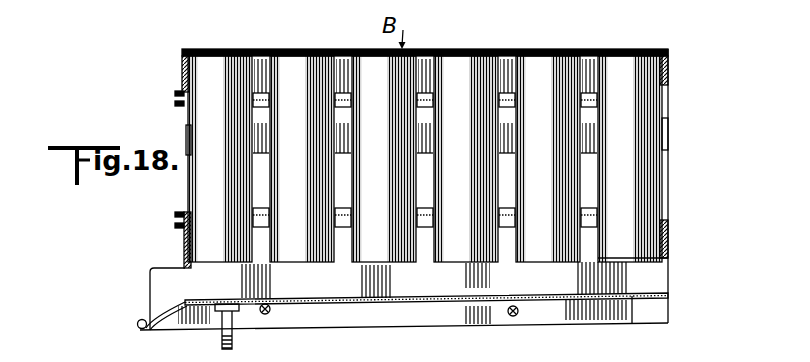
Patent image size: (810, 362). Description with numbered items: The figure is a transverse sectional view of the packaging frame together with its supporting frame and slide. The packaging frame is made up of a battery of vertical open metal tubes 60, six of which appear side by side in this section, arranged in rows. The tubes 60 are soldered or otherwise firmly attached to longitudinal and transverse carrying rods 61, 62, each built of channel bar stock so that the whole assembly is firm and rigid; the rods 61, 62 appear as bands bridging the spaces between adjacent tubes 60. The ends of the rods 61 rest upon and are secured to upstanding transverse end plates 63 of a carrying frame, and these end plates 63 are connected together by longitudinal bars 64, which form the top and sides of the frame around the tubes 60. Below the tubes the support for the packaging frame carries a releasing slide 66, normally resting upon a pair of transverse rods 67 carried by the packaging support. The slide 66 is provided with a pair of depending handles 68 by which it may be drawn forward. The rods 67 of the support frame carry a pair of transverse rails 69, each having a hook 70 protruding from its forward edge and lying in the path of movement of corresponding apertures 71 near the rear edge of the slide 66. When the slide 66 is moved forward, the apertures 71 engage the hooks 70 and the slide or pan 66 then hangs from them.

The vertical open metal tube 60 is at (545, 252).
The longitudinal carrying rod 61 is at (186, 209).
The transverse carrying rod 62 is at (178, 104).
The transverse end plate 63 is at (158, 284).
The longitudinal bar 64 is at (183, 77).
The releasing slide 66 is at (445, 290).
The transverse rod 67 is at (265, 314).
The depending handle 68 is at (222, 344).
The transverse rail 69 is at (447, 316).
The hook 70 is at (144, 329).
The aperture 71 is at (633, 323).